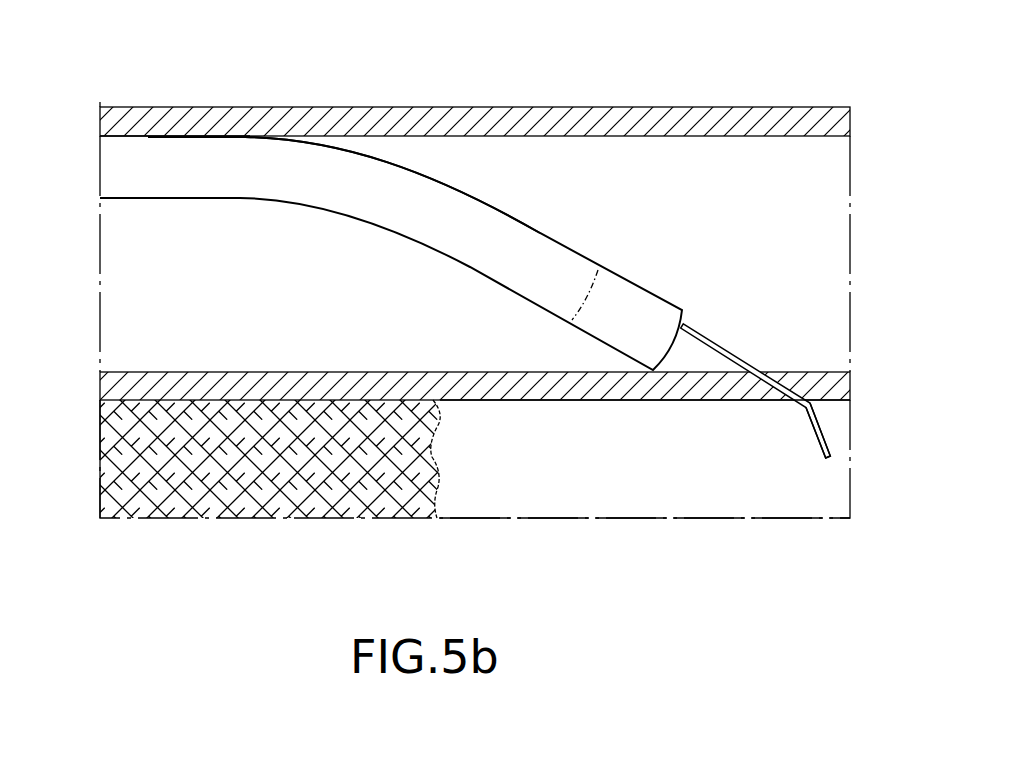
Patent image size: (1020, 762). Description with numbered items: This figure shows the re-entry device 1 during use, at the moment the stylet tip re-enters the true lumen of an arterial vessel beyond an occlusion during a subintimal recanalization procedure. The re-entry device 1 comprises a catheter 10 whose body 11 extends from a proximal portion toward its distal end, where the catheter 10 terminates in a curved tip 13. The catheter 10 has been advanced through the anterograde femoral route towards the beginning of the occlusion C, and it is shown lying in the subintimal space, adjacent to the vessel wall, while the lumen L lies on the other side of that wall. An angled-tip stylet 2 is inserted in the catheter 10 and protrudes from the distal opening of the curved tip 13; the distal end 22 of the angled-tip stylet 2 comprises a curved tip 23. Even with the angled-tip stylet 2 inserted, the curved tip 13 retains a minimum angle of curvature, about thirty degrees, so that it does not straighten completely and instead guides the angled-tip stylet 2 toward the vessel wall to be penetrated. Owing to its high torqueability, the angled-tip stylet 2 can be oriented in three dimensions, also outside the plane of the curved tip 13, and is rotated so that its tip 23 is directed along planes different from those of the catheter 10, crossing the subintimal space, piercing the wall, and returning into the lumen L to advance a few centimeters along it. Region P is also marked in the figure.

The re-entry device 1 is at (832, 247).
The angled-tip stylet 2 is at (798, 406).
The catheter 10 is at (247, 163).
The body 11 is at (147, 168).
The curved tip 13 is at (395, 250).
The distal end 22 is at (730, 350).
The curved tip 23 is at (829, 427).
The proximal region P is at (170, 286).
The occlusion C is at (252, 488).
The lumen L is at (565, 489).